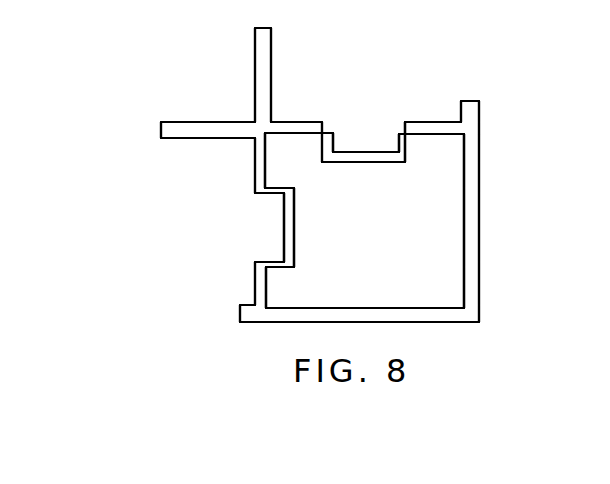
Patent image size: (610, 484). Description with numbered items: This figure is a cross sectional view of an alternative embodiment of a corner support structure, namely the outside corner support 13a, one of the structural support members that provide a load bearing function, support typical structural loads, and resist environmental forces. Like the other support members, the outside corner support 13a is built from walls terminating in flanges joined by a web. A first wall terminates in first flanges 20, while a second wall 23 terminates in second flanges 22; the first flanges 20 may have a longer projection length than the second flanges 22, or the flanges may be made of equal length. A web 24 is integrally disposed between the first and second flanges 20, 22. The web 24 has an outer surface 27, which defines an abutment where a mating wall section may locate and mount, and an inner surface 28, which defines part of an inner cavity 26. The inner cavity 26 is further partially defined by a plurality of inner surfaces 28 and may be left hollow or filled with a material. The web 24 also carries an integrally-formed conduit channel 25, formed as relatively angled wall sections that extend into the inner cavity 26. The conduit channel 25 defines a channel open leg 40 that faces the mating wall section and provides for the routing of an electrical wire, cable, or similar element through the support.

The outside corner support 13a is at (173, 224).
The first flange 20 is at (263, 43).
The second flange 22 is at (472, 98).
The second wall 23 is at (480, 208).
The web 24 is at (262, 160).
The conduit channel 25 is at (345, 100).
The inner cavity 26 is at (393, 248).
The outer surface 27 is at (422, 120).
The inner surface 28 is at (300, 133).
The channel open leg 40 is at (369, 126).